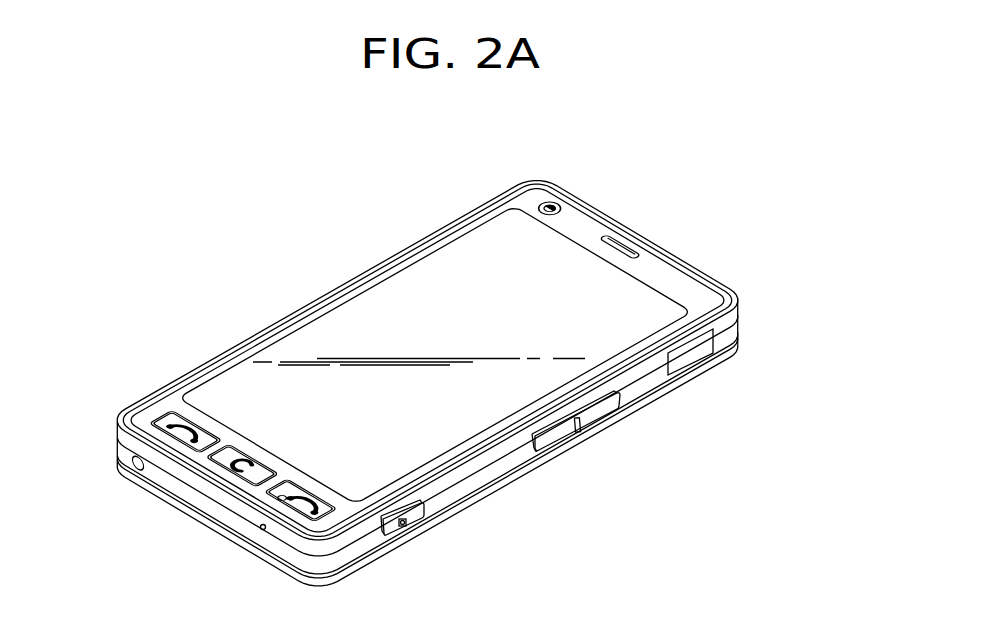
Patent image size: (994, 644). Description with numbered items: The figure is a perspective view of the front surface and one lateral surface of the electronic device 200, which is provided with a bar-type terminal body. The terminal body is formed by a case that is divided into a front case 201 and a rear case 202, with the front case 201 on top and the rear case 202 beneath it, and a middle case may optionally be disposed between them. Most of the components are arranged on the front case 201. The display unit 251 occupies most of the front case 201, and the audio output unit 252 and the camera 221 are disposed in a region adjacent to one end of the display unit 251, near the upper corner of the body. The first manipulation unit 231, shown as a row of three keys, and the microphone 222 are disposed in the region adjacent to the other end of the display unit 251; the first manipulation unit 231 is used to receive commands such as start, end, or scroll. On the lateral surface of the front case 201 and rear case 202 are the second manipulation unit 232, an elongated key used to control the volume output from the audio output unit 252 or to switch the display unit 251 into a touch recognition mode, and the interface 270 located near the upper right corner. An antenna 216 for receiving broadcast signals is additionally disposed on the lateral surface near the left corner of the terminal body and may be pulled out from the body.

The electronic device 200 is at (382, 226).
The front case 201 is at (732, 318).
The rear case 202 is at (732, 337).
The antenna 216 is at (132, 468).
The camera 221 is at (549, 208).
The microphone 222 is at (260, 530).
The first manipulation unit 231 is at (242, 465).
The second manipulation unit 232 is at (557, 438).
The display unit 251 is at (362, 293).
The audio output unit 252 is at (619, 247).
The interface 270 is at (692, 355).